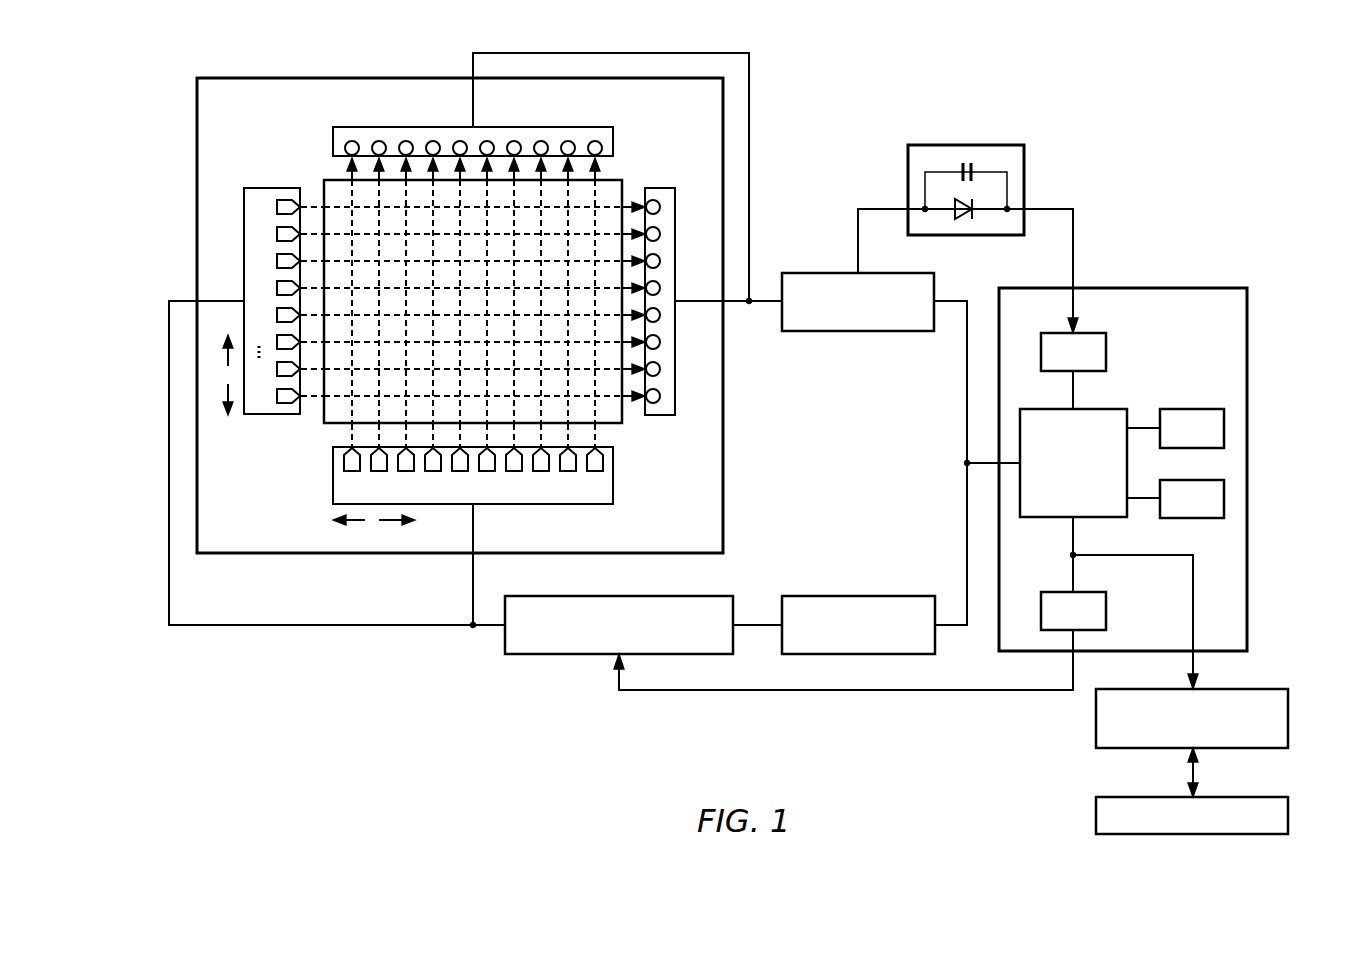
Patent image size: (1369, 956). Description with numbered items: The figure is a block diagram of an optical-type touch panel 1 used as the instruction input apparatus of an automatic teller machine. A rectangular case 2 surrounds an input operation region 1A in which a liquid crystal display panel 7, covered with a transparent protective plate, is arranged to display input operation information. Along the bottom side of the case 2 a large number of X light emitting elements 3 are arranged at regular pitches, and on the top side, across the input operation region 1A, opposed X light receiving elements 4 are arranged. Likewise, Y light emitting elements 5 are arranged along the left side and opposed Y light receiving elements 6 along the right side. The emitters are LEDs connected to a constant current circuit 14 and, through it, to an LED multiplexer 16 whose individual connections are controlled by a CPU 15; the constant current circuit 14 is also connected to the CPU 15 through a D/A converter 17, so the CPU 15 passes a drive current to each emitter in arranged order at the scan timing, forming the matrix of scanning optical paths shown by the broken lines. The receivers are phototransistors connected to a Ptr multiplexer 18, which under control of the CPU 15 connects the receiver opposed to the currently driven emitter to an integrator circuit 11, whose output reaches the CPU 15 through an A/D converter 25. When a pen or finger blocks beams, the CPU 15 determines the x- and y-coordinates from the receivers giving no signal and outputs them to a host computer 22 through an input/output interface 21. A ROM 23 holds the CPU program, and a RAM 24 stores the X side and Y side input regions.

The touch panel 1 is at (1172, 222).
The input operation region 1A is at (358, 222).
The case 2 is at (326, 79).
The X light emitting elements 3 is at (418, 468).
The X light receiving elements 4 is at (434, 142).
The Y light emitting elements 5 is at (270, 298).
The Y light receiving elements 6 is at (660, 315).
The liquid crystal display panel 7 is at (616, 187).
The integrator circuit 11 is at (968, 145).
The constant current circuit 14 is at (620, 594).
The CPU 15 is at (1098, 409).
The LED multiplexer 16 is at (856, 594).
The D/A converter 17 is at (1106, 611).
The Ptr multiplexer 18 is at (860, 331).
The input/output interface 21 is at (1288, 718).
The host computer 22 is at (1288, 816).
The ROM 23 is at (1194, 409).
The RAM 24 is at (1194, 518).
The A/D converter 25 is at (1086, 333).